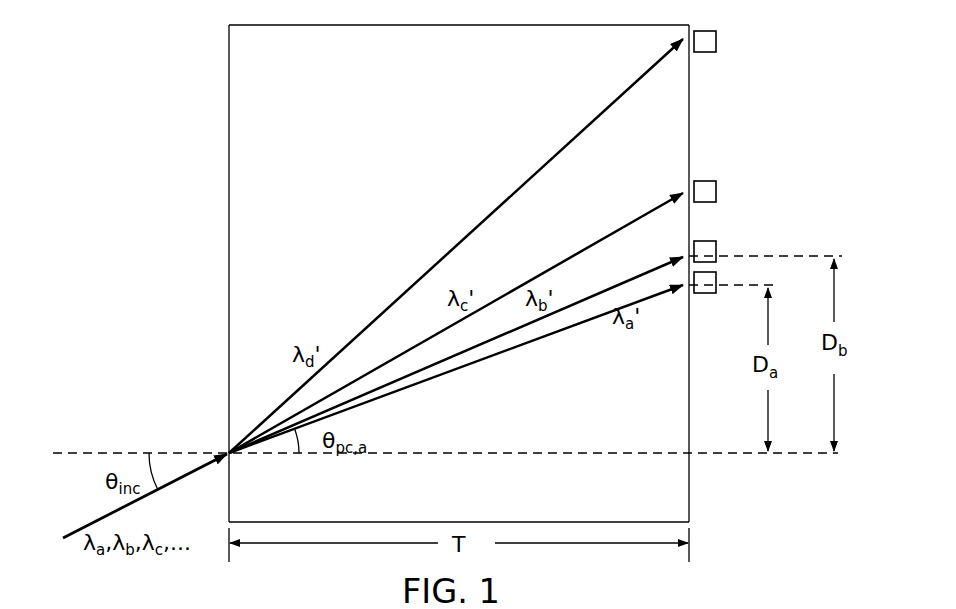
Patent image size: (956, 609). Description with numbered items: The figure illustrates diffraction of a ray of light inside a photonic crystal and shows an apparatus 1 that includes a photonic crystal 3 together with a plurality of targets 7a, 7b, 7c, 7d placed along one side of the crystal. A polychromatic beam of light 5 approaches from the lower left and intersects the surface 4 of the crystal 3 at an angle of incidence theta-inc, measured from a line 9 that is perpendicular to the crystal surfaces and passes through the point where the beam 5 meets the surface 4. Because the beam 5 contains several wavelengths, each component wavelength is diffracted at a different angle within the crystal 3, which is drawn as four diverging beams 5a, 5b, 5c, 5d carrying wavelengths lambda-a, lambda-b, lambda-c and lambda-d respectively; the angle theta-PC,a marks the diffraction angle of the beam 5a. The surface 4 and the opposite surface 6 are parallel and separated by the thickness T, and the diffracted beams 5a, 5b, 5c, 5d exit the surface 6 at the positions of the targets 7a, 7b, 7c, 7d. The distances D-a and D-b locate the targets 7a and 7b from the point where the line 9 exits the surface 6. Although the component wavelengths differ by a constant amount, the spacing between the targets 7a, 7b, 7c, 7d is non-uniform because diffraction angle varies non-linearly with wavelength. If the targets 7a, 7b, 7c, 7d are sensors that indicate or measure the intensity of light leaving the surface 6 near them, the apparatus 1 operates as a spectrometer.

The apparatus 1 is at (172, 71).
The photonic crystal 3 is at (483, 484).
The surface 4 is at (229, 183).
The polychromatic beam of light 5 is at (96, 520).
The beam 5a is at (532, 342).
The beam 5b is at (655, 268).
The beam 5c is at (600, 240).
The beam 5d is at (525, 182).
The surface 6 is at (689, 115).
The target 7a is at (710, 293).
The target 7b is at (716, 250).
The target 7c is at (716, 193).
The target 7d is at (716, 42).
The line 9 is at (97, 453).